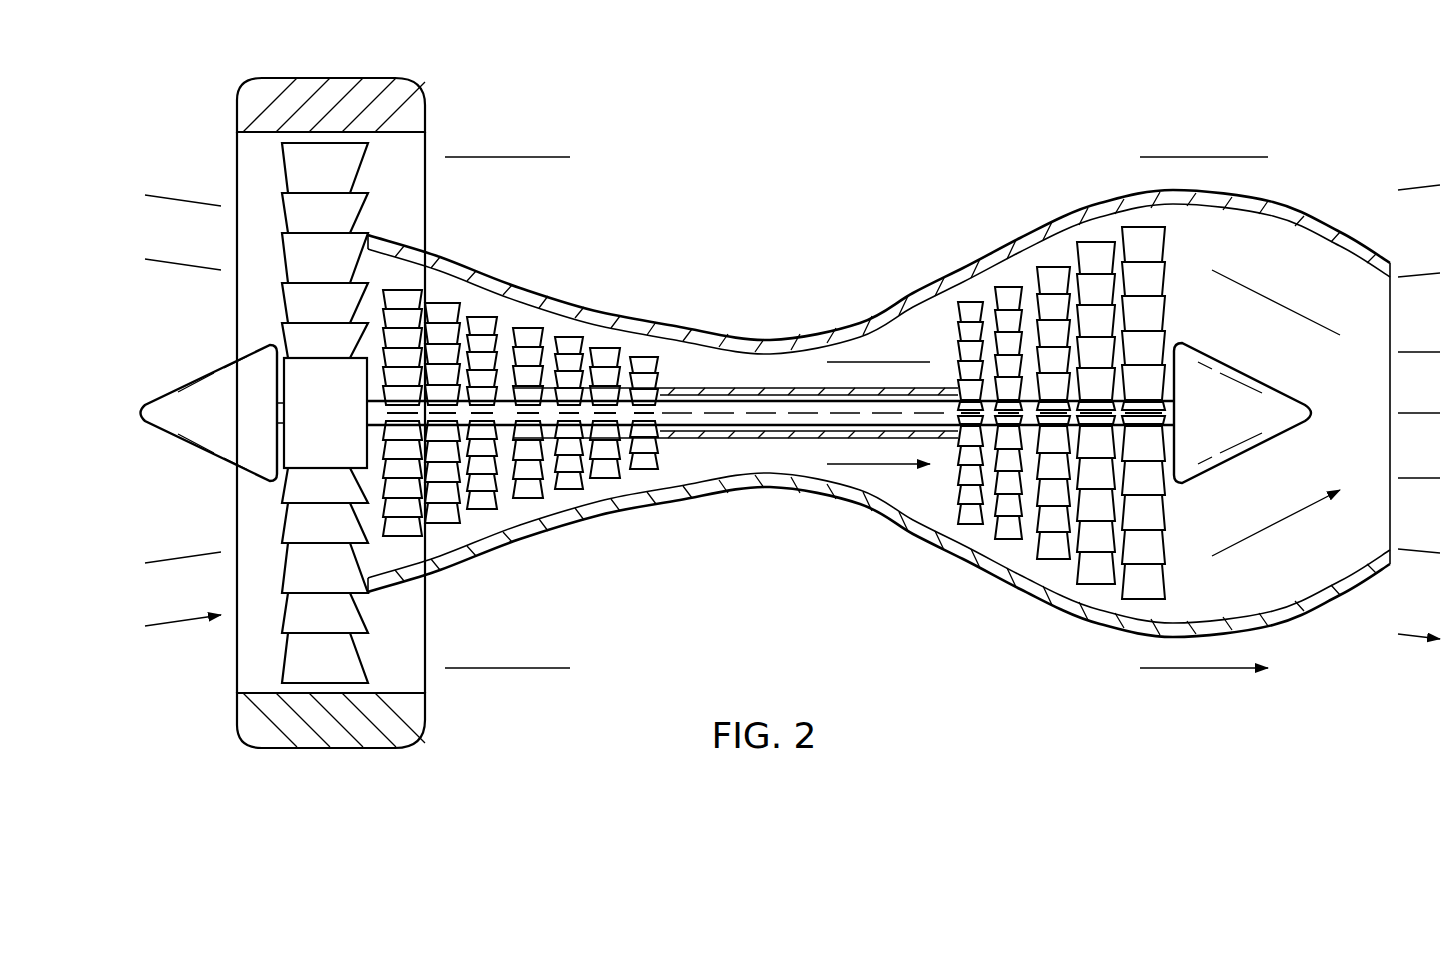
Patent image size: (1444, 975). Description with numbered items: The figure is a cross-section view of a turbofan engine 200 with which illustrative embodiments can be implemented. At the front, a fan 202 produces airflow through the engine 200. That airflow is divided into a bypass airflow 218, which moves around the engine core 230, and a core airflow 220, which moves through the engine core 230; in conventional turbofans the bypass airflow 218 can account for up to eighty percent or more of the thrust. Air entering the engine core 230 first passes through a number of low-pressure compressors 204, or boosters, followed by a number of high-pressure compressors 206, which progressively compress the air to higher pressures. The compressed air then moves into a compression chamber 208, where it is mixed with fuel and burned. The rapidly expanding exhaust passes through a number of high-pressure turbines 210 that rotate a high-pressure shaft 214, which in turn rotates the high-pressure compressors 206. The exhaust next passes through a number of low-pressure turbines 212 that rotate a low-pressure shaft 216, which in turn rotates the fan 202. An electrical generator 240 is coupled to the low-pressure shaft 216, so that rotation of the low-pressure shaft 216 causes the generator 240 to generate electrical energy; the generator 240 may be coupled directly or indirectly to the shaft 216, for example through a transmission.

The turbofan engine 200 is at (1286, 114).
The fan 202 is at (264, 645).
The low-pressure compressors 204 is at (467, 567).
The high-pressure compressors 206 is at (587, 530).
The compression chamber 208 is at (893, 479).
The high-pressure turbines 210 is at (984, 290).
The low-pressure turbines 212 is at (1066, 572).
The high-pressure shaft 214 is at (735, 388).
The low-pressure shaft 216 is at (765, 422).
The bypass airflow 218 is at (856, 380).
The core airflow 220 is at (871, 360).
The engine core 230 is at (121, 258).
The electrical generator 240 is at (304, 428).